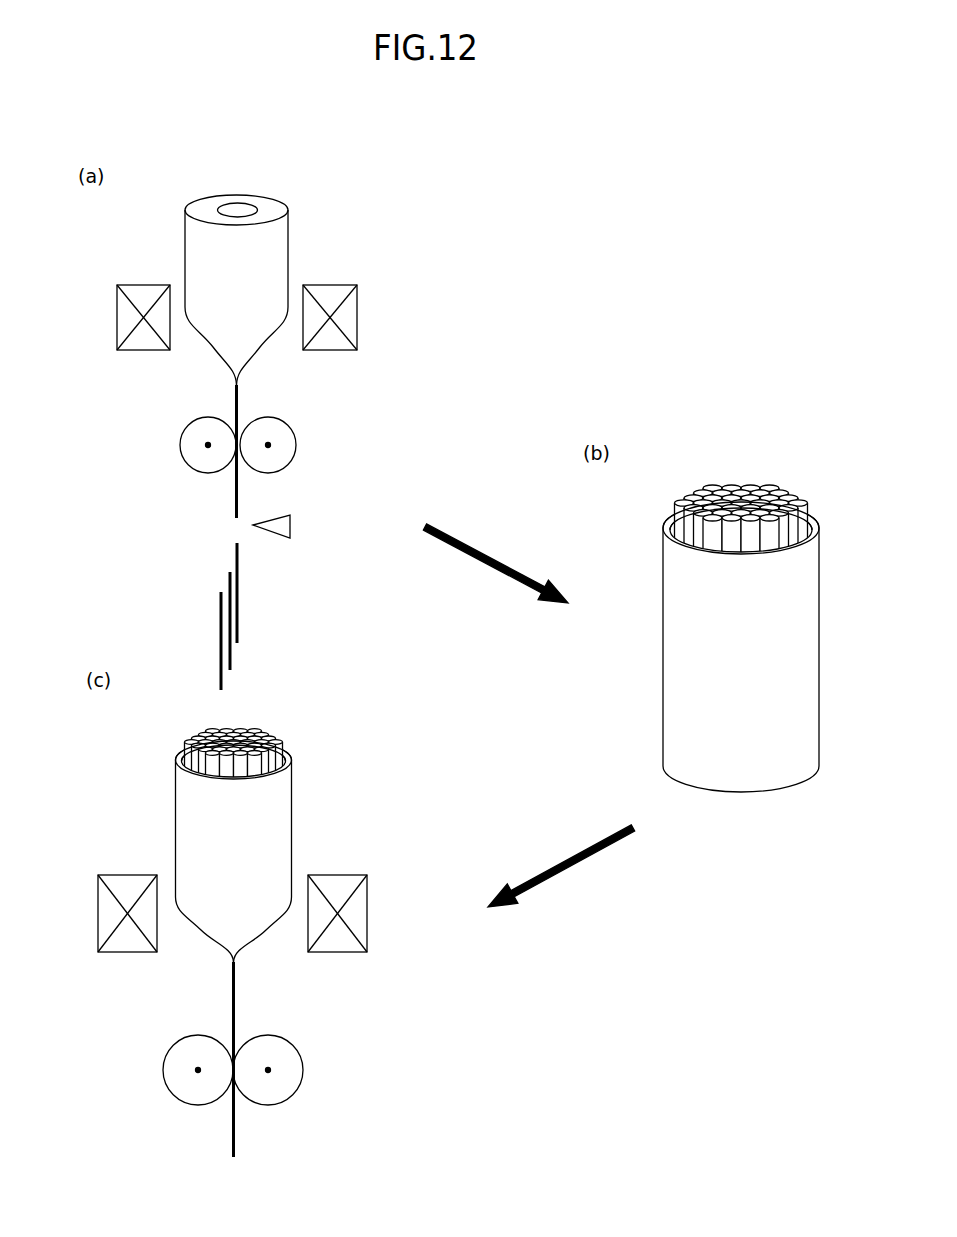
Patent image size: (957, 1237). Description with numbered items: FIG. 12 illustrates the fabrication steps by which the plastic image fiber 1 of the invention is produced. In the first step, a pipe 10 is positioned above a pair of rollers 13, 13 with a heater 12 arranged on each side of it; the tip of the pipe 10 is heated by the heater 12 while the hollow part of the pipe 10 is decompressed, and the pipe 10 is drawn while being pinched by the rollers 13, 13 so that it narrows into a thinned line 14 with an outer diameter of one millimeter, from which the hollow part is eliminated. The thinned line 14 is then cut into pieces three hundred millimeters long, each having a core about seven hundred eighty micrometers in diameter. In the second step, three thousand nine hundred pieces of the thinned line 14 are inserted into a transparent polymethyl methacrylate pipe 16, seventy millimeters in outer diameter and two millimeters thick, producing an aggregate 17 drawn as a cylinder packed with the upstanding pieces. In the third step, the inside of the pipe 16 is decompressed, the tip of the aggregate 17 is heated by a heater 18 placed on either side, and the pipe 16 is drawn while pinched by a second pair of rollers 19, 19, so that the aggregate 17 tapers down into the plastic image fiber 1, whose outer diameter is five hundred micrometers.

The plastic image fiber 1 is at (236, 1145).
The pipe 10 is at (280, 238).
The heater 12 is at (120, 316).
The rollers 13 is at (186, 445).
The thinned line 14 is at (238, 628).
The transparent polymethyl methacrylate pipe 16 is at (800, 572).
The aggregate 17 is at (818, 630).
The heater 18 is at (112, 917).
The rollers 19 is at (192, 1058).